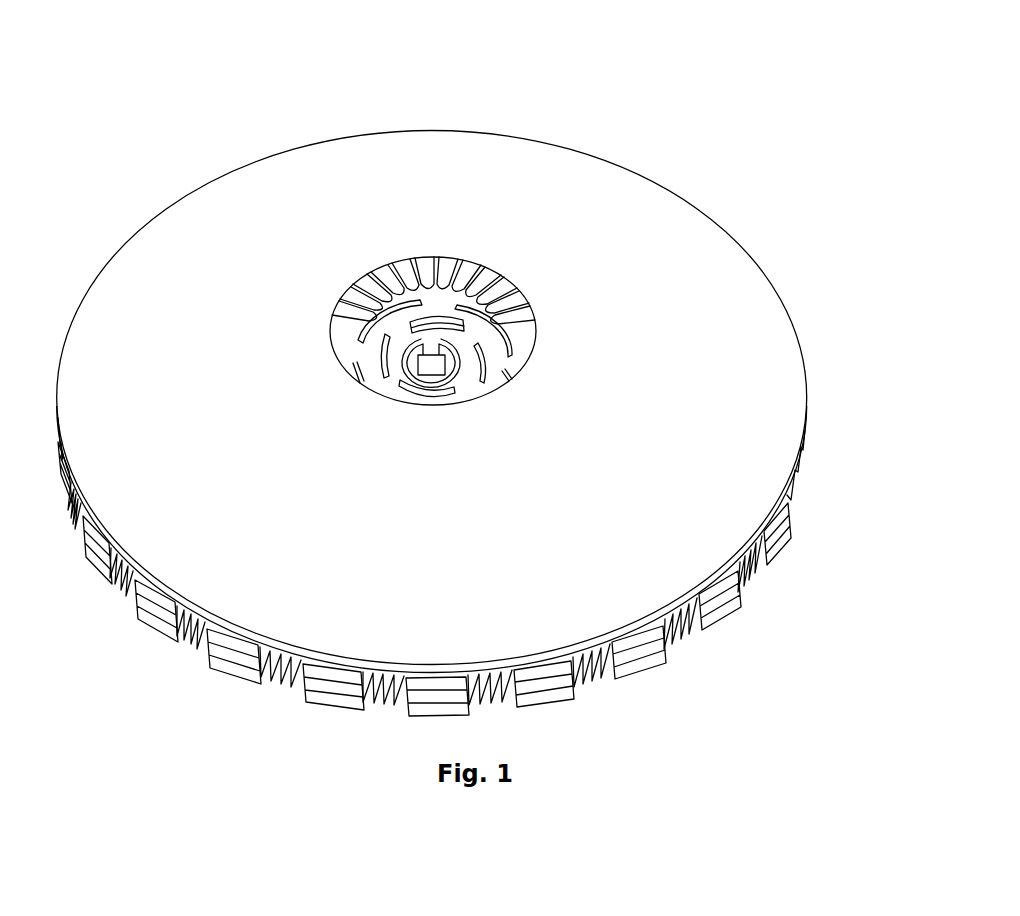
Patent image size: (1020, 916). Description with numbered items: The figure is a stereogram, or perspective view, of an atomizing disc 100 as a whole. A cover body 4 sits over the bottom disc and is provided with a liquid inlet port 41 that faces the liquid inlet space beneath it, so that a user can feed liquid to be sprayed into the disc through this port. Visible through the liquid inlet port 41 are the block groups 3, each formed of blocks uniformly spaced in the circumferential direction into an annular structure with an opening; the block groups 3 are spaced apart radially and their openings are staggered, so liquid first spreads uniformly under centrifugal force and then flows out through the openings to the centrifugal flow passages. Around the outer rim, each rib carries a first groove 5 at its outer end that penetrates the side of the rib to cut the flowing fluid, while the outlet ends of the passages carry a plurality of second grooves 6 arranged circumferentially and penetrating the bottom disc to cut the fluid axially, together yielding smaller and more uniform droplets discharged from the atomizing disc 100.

The atomizing disc 100 is at (507, 62).
The block group 3 is at (448, 292).
The cover body 4 is at (683, 363).
The liquid inlet port 41 is at (488, 270).
The first groove 5 is at (722, 597).
The second groove 6 is at (60, 180).